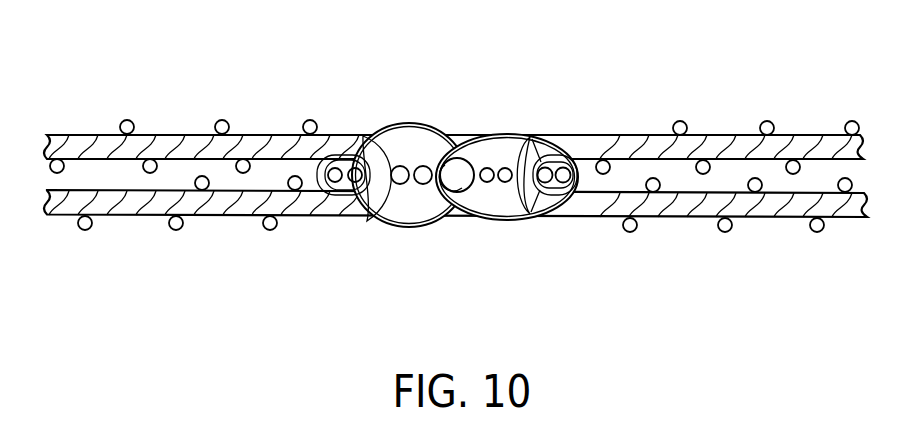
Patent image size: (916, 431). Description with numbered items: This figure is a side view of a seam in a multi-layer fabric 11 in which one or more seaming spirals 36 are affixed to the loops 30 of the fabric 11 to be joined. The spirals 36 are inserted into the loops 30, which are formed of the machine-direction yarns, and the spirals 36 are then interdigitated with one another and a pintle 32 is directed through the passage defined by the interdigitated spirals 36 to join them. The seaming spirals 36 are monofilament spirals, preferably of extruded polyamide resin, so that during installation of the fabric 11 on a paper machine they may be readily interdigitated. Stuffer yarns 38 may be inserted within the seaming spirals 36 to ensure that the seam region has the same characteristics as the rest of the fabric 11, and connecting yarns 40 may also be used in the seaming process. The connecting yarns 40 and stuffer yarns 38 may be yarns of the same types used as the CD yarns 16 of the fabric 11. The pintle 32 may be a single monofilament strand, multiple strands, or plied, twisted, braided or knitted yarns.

The fabric 11 is at (640, 86).
The CD yarns 16 is at (631, 235).
The loops 30 is at (348, 143).
The pintle 32 is at (458, 172).
The seaming spirals 36 is at (403, 127).
The stuffer yarns 38 is at (425, 183).
The connecting yarns 40 is at (353, 180).